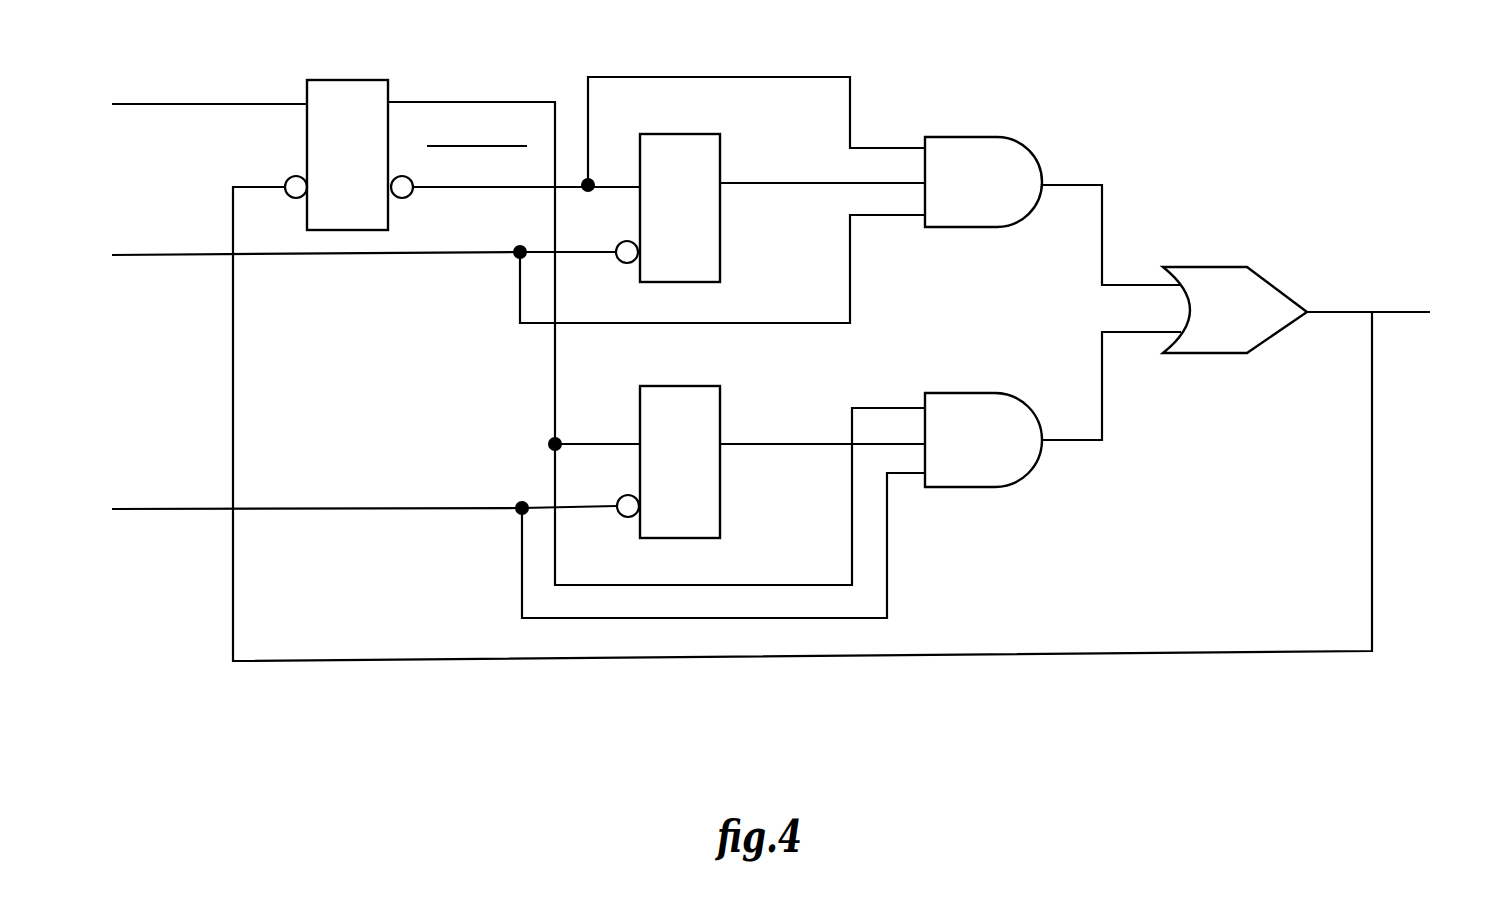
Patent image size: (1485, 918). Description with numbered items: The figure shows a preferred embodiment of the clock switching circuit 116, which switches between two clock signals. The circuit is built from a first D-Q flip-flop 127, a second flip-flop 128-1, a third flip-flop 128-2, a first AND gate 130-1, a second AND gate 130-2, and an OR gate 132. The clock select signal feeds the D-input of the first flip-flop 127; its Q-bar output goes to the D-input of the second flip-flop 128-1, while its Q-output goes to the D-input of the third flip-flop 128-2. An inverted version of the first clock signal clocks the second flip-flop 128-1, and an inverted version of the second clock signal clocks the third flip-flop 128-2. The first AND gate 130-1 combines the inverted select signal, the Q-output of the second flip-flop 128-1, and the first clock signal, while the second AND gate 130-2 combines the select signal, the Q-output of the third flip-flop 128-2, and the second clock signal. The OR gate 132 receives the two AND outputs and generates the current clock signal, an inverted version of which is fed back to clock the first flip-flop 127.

The clock switching circuit 116 is at (1206, 115).
The first D-Q flip-flop 127 is at (350, 80).
The second D-Q flip-flop 128-1 is at (681, 134).
The third D-Q flip-flop 128-2 is at (682, 386).
The first AND gate 130-1 is at (953, 137).
The second AND gate 130-2 is at (951, 393).
The OR gate 132 is at (1205, 267).